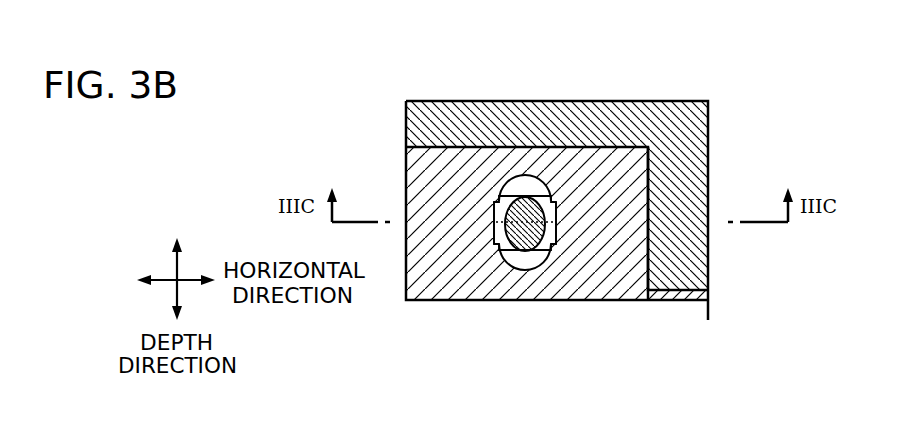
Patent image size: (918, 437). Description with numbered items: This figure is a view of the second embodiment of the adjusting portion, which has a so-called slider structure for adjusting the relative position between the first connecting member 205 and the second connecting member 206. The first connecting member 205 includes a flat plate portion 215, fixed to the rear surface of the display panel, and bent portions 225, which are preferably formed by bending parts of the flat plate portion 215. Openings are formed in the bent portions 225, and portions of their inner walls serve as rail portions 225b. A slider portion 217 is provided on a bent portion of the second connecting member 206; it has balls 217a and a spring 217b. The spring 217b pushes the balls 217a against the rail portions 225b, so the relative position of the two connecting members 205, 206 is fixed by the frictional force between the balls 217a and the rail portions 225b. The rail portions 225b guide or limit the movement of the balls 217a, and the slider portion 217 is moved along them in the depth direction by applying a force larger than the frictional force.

The first connecting member 205 is at (647, 306).
The second connecting member 206 is at (639, 96).
The flat plate portion 215 is at (690, 300).
The slider portion 217 is at (497, 240).
The ball 217a is at (493, 222).
The spring 217b is at (535, 197).
The bent portion 225 is at (602, 256).
The rail portion 225b is at (568, 245).